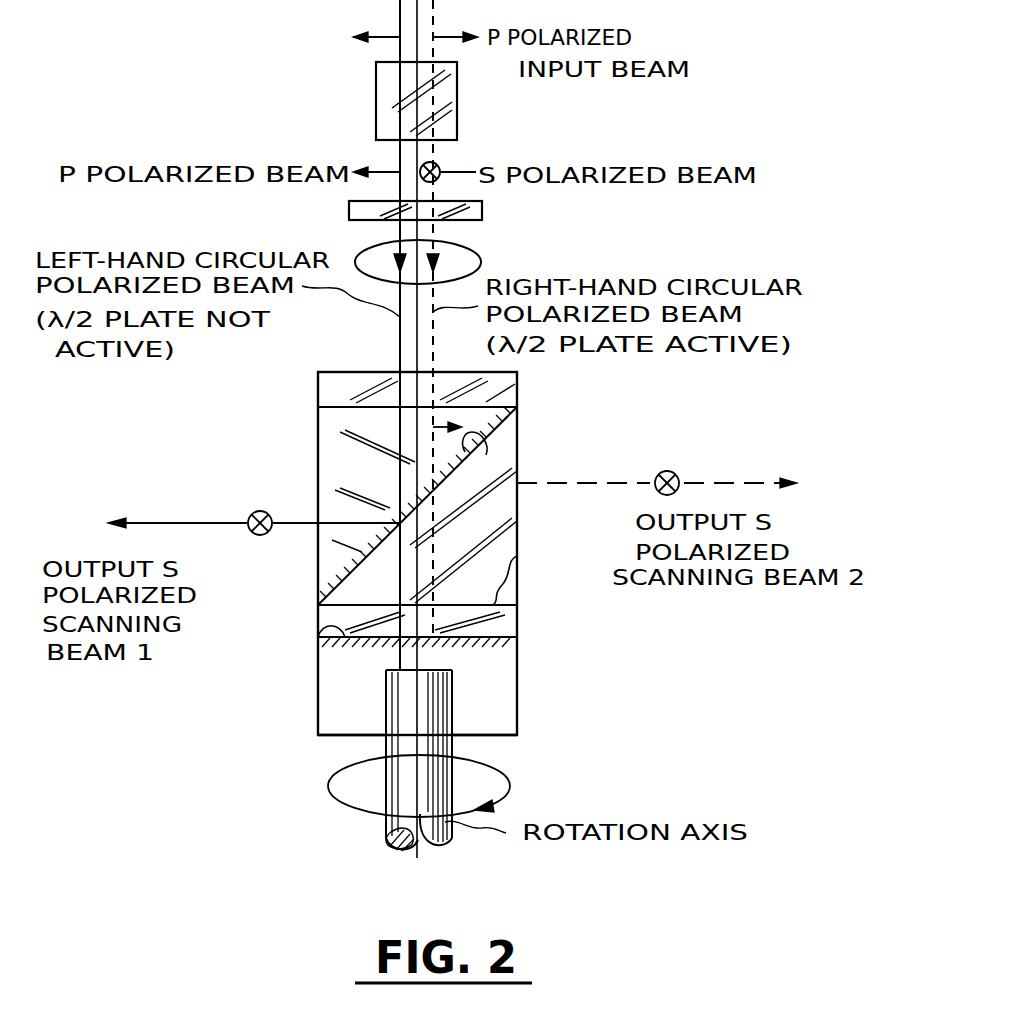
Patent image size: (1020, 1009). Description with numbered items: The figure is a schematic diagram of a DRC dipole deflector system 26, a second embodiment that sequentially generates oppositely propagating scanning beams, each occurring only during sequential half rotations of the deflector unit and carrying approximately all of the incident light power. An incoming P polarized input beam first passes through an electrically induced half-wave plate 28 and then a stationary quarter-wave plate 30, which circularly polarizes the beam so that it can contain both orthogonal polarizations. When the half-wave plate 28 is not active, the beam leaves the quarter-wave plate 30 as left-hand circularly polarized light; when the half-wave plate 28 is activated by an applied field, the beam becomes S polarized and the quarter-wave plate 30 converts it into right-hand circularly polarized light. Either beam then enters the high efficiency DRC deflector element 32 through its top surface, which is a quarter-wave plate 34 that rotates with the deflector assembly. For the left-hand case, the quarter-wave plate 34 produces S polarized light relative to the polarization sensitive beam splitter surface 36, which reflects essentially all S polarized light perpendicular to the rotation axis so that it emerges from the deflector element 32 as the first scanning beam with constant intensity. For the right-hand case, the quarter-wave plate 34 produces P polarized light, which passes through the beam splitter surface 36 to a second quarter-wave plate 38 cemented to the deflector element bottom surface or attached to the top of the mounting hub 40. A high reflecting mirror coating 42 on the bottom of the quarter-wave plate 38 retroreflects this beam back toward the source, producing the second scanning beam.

The DRC dipole deflector system 26 is at (310, 128).
The electrically induced half-wave plate 28 is at (447, 100).
The stationary quarter-wave plate 30 is at (482, 211).
The DRC deflector element 32 is at (343, 457).
The quarter-wave plate 34 is at (517, 388).
The polarization sensitive beam splitter surface 36 is at (517, 457).
The quarter-wave plate 38 is at (517, 555).
The mounting hub 40 is at (505, 707).
The high reflecting mirror coating 42 is at (320, 637).